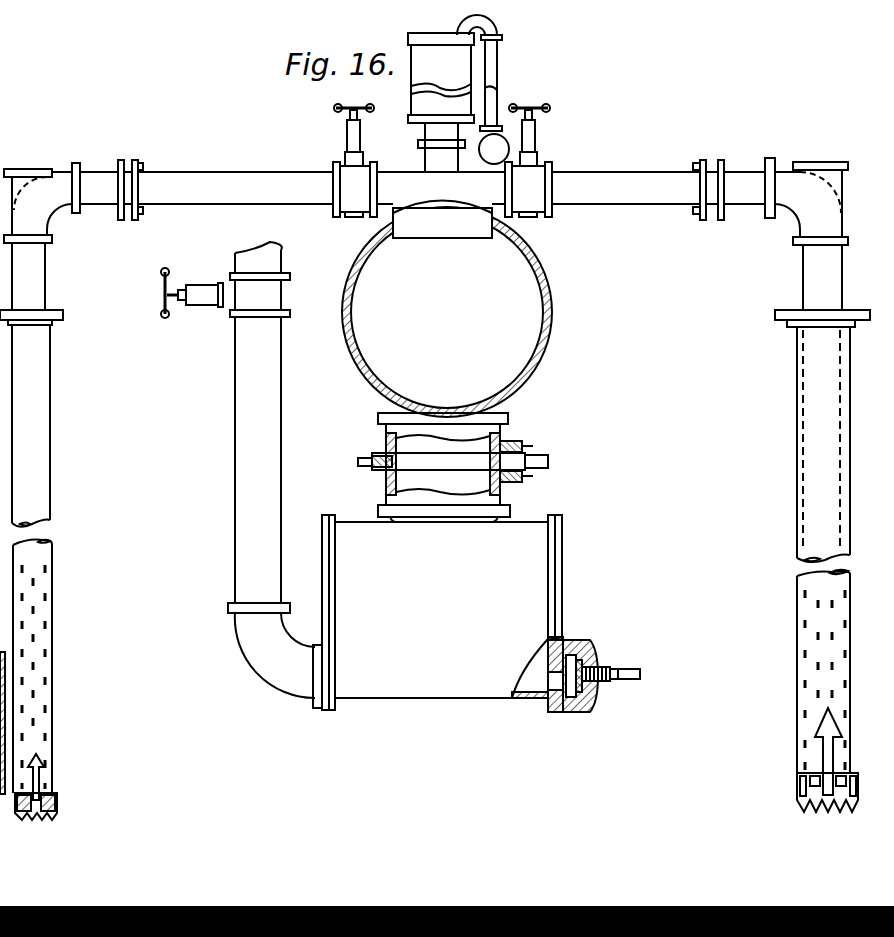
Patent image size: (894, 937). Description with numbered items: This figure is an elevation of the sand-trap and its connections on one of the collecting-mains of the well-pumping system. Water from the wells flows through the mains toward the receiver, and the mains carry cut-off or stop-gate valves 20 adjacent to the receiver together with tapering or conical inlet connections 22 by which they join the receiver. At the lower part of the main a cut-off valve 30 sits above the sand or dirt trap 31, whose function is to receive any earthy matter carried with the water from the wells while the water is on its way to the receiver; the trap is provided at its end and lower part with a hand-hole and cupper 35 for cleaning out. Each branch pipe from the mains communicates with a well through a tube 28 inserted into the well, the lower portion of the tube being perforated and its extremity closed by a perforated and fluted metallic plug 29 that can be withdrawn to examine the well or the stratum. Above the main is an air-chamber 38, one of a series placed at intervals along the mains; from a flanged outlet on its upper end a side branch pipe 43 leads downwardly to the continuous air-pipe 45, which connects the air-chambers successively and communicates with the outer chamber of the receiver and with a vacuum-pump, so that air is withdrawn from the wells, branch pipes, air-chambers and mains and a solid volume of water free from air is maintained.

The cut-off or stop-gate valve 20 is at (346, 142).
The tapering or conical inlet connection 22 is at (447, 309).
The tube 28 is at (826, 452).
The perforated and fluted metallic plug 29 is at (52, 793).
The cut-off valve 30 is at (467, 455).
The sand or dirt trap 31 is at (442, 612).
The hand-hole and cupper 35 is at (573, 712).
The air-chamber 38 is at (441, 102).
The side branch pipe 43 is at (497, 73).
The air-pipe 45 is at (625, 181).